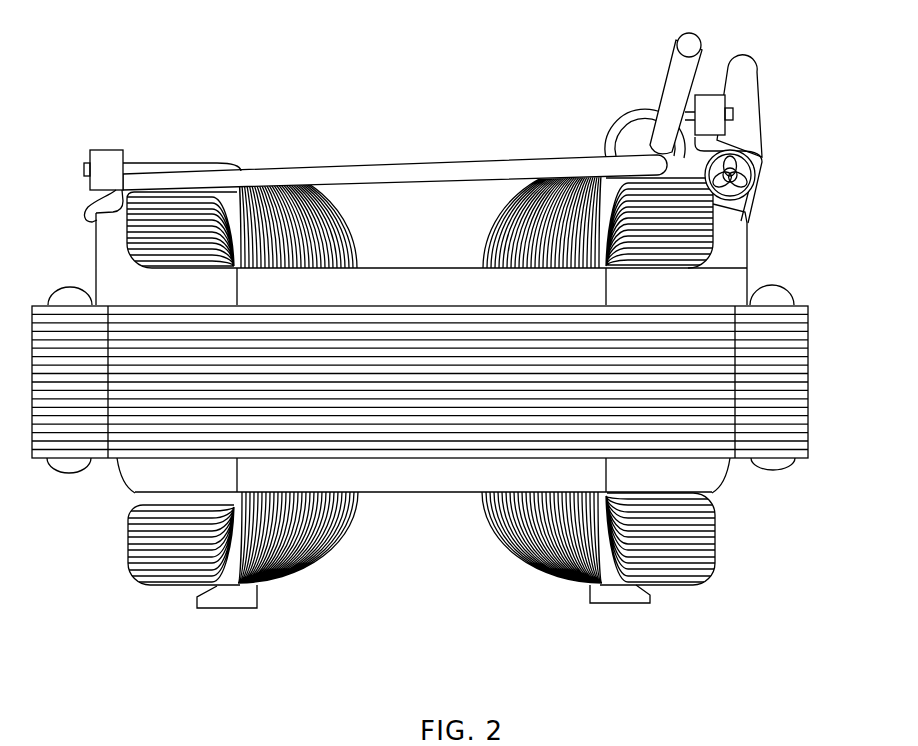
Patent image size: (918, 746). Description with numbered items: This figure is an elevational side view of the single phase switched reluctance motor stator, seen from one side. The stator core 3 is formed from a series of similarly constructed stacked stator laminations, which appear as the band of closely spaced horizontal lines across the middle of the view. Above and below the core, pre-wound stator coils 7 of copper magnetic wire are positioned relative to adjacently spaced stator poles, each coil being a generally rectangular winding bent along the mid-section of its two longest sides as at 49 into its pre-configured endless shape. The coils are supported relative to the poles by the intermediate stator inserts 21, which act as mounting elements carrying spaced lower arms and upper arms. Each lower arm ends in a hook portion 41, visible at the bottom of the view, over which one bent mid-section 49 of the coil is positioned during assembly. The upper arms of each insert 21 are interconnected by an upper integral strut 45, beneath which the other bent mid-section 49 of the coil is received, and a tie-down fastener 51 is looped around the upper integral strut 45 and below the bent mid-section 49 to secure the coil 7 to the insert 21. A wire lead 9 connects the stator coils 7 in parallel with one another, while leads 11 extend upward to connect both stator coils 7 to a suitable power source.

The stator core 3 is at (823, 368).
The stator coil 7 is at (360, 530).
The wire lead 9 is at (441, 178).
The lead 11 is at (680, 73).
The stator insert 21 is at (108, 495).
The hook portion 41 is at (202, 605).
The upper integral strut 45 is at (95, 268).
The bent mid-section 49 is at (652, 212).
The tie-down fastener 51 is at (760, 148).